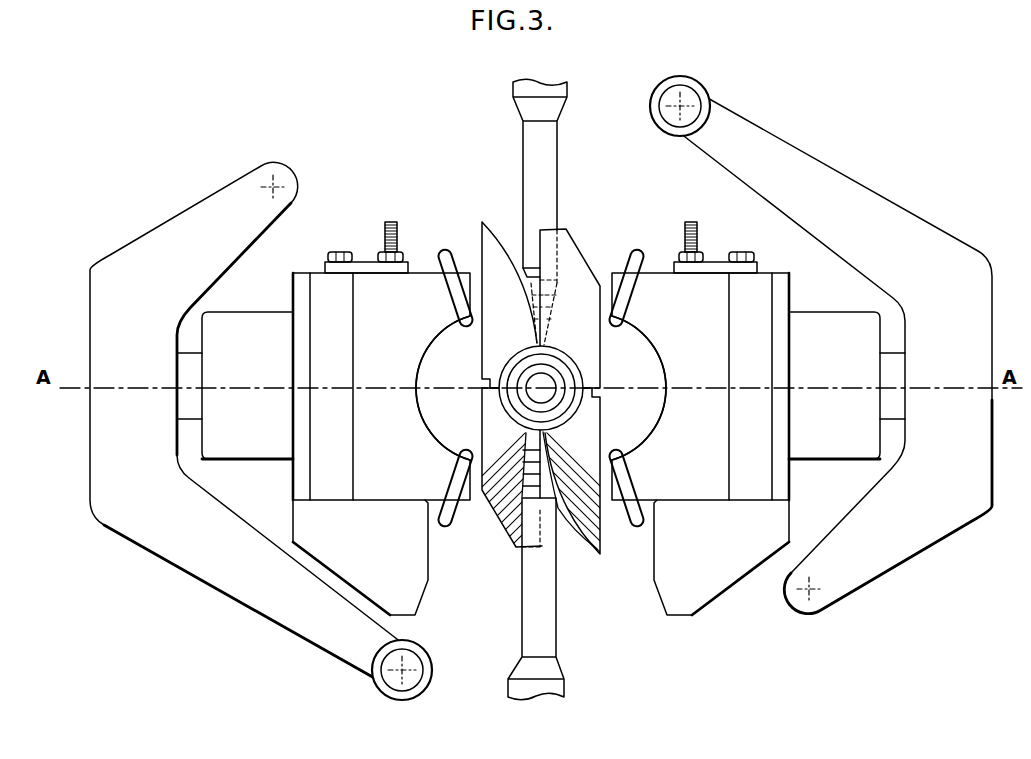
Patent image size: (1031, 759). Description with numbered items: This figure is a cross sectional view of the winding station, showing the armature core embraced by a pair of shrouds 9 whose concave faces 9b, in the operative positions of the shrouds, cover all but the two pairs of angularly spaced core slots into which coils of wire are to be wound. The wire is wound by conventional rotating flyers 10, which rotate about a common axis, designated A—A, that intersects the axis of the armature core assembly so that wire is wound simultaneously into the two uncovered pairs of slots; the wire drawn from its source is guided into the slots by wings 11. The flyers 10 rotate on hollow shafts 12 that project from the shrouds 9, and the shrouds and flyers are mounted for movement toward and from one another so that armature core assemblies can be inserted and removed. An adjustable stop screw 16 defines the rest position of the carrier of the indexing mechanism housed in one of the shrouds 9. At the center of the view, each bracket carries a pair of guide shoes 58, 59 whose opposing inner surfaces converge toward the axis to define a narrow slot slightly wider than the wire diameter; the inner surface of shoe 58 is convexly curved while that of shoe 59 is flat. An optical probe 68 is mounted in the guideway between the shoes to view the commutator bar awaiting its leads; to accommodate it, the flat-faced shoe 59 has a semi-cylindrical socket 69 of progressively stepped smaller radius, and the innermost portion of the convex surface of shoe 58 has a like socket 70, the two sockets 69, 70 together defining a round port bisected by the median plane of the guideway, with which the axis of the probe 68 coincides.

The shroud 9 is at (397, 326).
The concave face 9b is at (428, 380).
The rotating flyer 10 is at (363, 677).
The wing 11 is at (455, 258).
The hollow shaft 12 is at (185, 360).
The adjustable stop screw 16 is at (384, 232).
The guide shoe 58 is at (516, 337).
The guide shoe 59 is at (584, 337).
The optical probe 68 is at (536, 185).
The semi-cylindrical socket 69 is at (558, 283).
The semi-cylindrical socket 70 is at (528, 292).